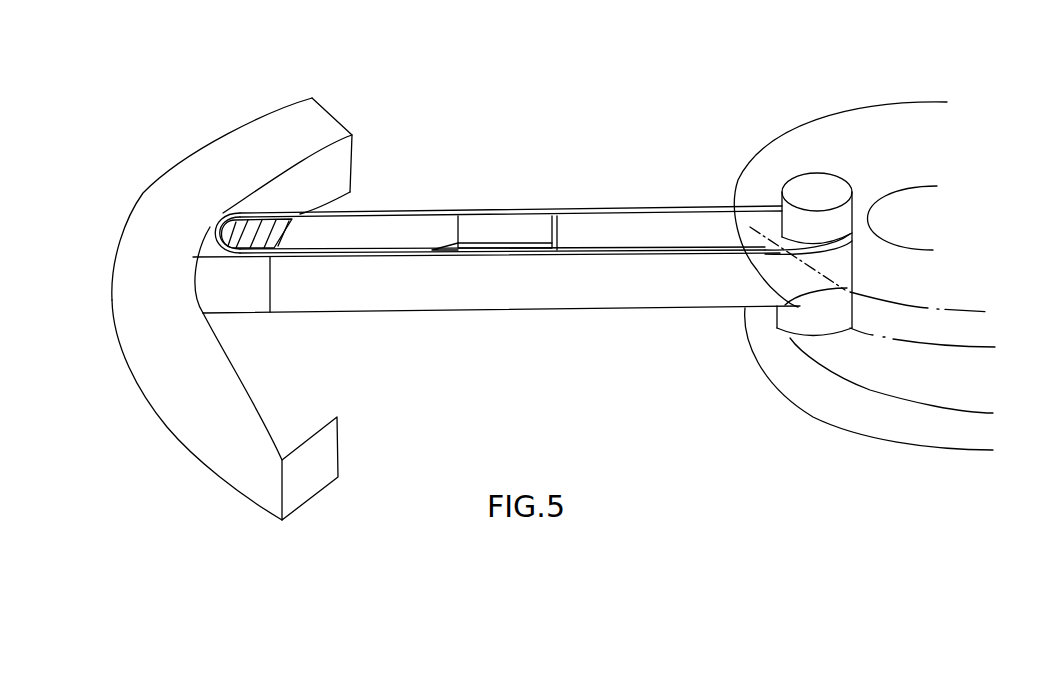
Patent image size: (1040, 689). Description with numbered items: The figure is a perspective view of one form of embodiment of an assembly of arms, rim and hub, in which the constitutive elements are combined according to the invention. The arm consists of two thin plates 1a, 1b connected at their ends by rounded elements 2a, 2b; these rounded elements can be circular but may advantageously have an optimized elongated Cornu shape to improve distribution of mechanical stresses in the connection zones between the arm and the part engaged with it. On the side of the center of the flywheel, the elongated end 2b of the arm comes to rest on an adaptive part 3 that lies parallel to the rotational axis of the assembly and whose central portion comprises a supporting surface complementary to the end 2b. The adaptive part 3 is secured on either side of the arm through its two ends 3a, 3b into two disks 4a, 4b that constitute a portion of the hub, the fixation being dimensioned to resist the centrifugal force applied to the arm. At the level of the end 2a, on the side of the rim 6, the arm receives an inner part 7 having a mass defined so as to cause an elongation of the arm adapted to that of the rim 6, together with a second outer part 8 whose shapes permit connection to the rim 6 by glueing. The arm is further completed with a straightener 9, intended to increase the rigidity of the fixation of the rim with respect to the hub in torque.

The thin plate 1a is at (592, 288).
The thin plate 1b is at (619, 224).
The rounded element 2a is at (262, 213).
The rounded element 2b is at (847, 265).
The adaptive part 3 is at (790, 238).
The end of adaptive part 3a is at (803, 325).
The end of adaptive part 3b is at (808, 188).
The disk 4a is at (812, 392).
The disk 4b is at (860, 137).
The rim 6 is at (258, 142).
The inner part 7 is at (300, 232).
The outer part 8 is at (210, 243).
The straightener 9 is at (515, 227).